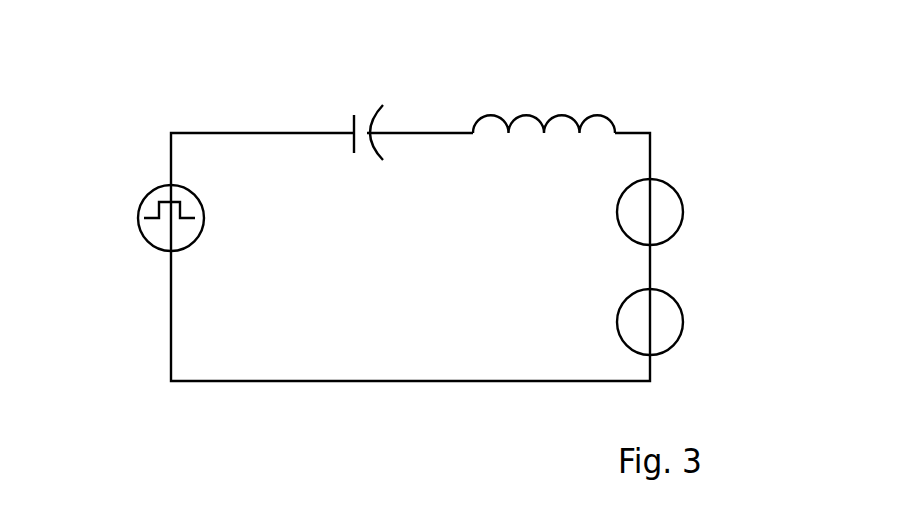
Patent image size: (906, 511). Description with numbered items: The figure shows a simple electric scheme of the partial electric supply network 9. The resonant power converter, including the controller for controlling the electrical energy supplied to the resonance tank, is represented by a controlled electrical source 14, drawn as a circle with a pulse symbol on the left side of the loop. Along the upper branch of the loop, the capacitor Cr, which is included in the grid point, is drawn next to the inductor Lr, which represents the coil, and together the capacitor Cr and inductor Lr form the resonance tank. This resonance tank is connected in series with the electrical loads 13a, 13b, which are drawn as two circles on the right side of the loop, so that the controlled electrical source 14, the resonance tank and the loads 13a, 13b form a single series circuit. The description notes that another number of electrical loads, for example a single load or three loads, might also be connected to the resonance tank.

The partial electric supply network 9 is at (416, 205).
The controlled electrical source 14 is at (137, 218).
The electrical load 13a is at (686, 212).
The electrical load 13b is at (686, 322).
The capacitor Cr is at (364, 120).
The inductor Lr is at (544, 106).